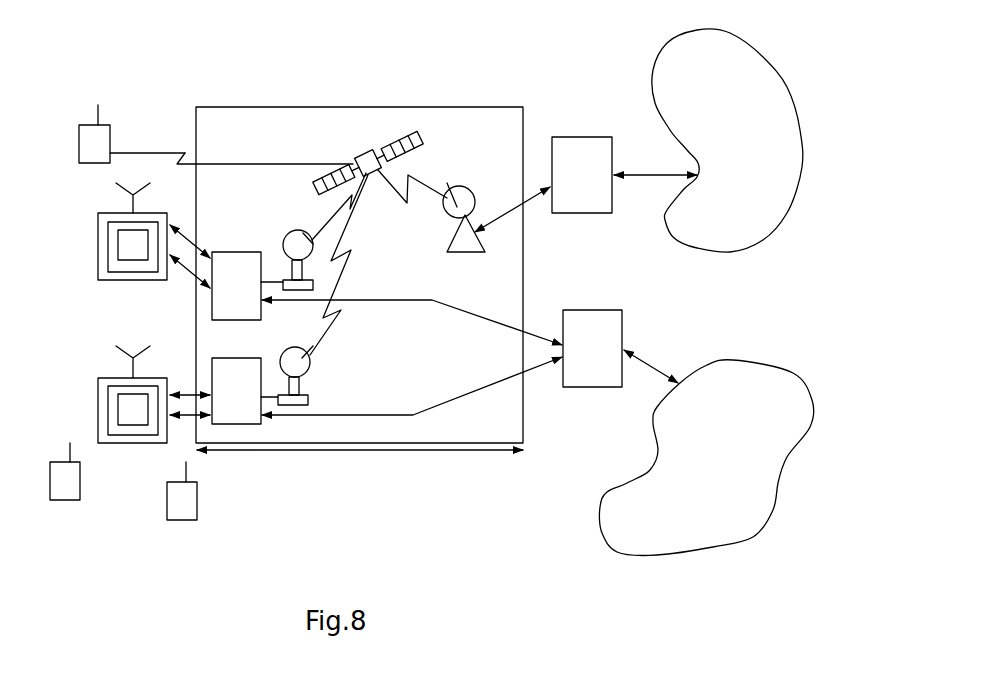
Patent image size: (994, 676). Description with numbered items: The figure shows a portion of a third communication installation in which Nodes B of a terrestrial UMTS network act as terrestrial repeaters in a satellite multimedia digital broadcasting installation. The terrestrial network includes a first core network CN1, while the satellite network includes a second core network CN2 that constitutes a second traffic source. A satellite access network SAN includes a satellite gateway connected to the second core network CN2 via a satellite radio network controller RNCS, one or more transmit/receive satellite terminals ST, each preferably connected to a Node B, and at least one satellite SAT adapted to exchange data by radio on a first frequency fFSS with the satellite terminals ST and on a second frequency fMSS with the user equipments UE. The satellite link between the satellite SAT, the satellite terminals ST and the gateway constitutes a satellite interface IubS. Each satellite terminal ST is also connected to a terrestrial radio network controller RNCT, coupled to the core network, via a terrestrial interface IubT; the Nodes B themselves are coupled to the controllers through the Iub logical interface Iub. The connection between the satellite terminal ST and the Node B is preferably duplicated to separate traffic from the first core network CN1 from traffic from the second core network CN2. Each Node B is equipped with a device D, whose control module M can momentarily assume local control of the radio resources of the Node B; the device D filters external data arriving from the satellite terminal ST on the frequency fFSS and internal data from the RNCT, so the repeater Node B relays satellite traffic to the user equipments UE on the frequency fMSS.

The user equipment UE is at (110, 145).
The element Node B is at (95, 311).
The control module M is at (118, 248).
The device D is at (118, 272).
The satellite access network SAN is at (297, 107).
The satellite SAT is at (370, 150).
The satellite terminal ST is at (285, 242).
The second frequency fMSS is at (246, 137).
The first frequency fFSS is at (389, 274).
The satellite interface IubS is at (466, 217).
The terrestrial interface IubT is at (412, 357).
The Iub logical interface Iub is at (360, 472).
The satellite radio network controller RNCS is at (578, 137).
The terrestrial radio network controller RNCT is at (603, 310).
The first core network CN1 is at (600, 525).
The second core network CN2 is at (740, 250).